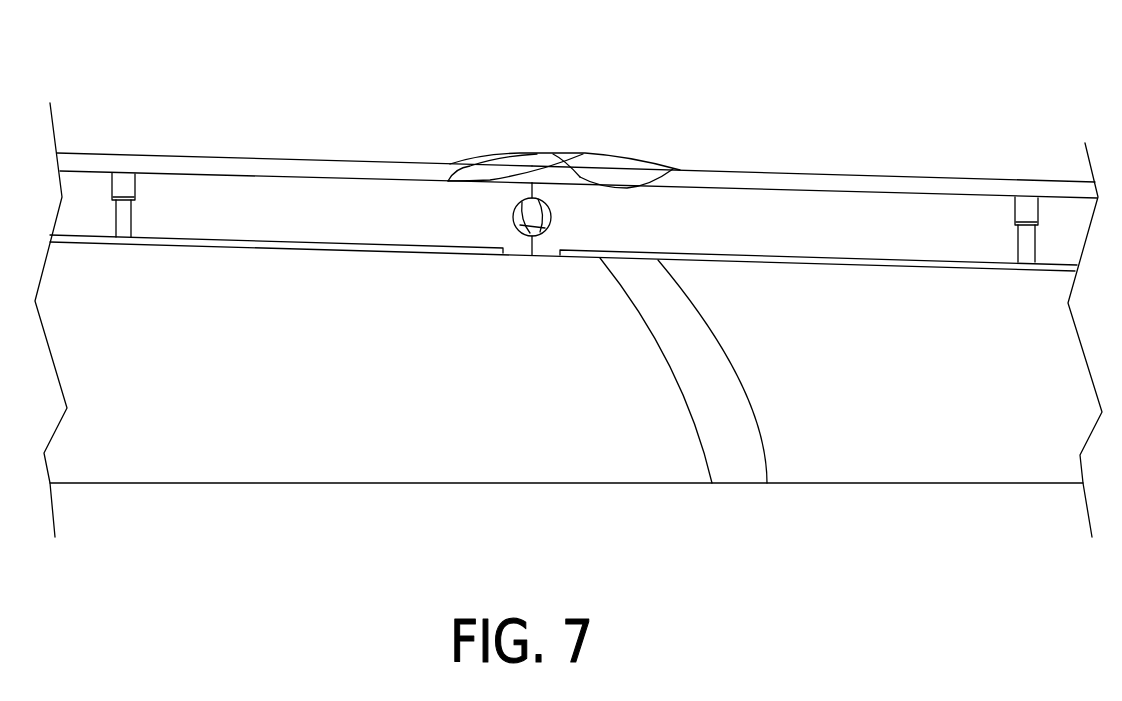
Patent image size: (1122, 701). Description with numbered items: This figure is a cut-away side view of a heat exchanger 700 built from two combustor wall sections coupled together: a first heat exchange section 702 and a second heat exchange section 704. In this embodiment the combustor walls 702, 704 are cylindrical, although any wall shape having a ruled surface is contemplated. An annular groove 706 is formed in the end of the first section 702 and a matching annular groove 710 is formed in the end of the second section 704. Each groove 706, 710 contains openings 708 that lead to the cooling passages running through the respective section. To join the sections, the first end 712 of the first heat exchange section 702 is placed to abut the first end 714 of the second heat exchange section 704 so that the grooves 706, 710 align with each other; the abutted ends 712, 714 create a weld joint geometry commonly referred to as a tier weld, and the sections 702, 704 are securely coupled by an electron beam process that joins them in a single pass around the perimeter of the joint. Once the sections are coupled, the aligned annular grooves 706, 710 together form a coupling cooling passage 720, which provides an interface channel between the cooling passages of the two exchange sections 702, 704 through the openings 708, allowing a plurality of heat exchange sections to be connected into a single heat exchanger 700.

The heat exchanger 700 is at (895, 78).
The first heat exchange section 702 is at (213, 158).
The second heat exchange section 704 is at (927, 175).
The annular groove 706 is at (517, 205).
The openings 708 is at (515, 218).
The annular groove 710 is at (548, 204).
The first end 712 is at (493, 178).
The first end 714 is at (535, 192).
The coupling cooling passage 720 is at (527, 233).